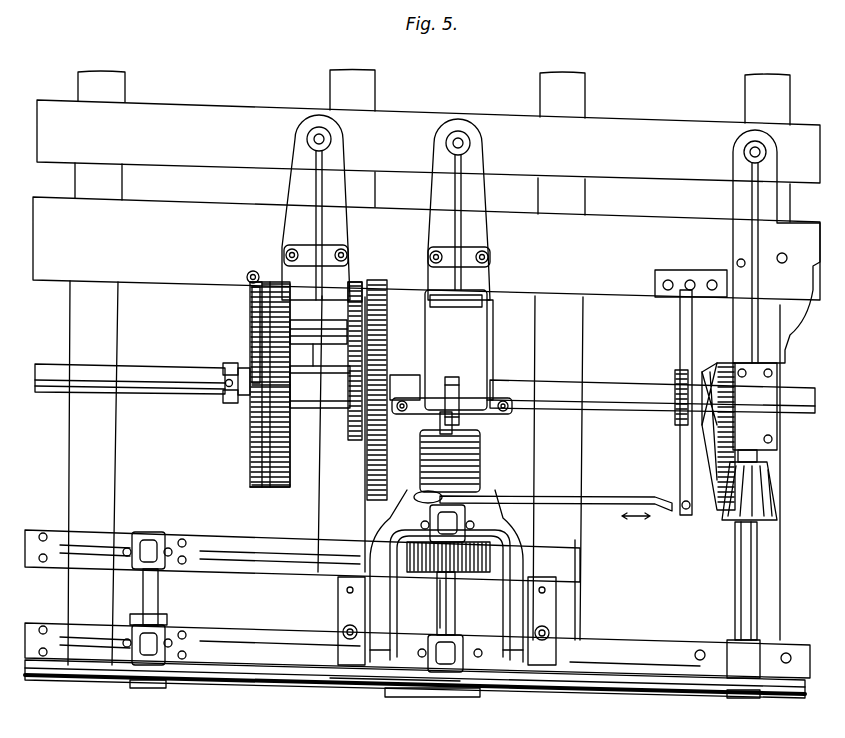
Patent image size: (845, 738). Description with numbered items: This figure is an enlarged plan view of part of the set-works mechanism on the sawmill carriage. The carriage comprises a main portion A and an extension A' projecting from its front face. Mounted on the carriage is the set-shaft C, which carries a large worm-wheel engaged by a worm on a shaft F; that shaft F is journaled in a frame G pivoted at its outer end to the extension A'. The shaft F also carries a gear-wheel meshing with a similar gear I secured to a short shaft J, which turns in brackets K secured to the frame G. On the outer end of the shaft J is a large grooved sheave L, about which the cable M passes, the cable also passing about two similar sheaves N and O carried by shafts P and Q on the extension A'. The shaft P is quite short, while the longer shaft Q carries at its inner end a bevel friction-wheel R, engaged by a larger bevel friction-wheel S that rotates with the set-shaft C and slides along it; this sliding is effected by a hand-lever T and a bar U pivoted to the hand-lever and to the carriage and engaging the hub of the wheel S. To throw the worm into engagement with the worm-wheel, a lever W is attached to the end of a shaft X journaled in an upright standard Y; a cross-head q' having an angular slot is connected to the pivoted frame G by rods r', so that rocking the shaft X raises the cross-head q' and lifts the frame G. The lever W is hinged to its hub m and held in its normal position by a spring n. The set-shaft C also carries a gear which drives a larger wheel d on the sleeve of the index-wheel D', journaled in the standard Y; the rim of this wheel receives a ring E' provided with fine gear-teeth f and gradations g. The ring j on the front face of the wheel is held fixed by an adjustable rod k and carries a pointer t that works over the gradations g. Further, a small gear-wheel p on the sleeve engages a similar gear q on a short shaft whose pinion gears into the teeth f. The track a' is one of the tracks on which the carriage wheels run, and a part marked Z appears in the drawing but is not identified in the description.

The main portion of the carriage A is at (426, 368).
The extension of the carriage A' is at (422, 604).
The set-shaft C is at (47, 368).
The index-wheel D' is at (274, 384).
The indicator-ring E' is at (264, 335).
The shaft F is at (456, 606).
The frame G is at (446, 577).
The gear I is at (430, 561).
The short shaft J is at (437, 608).
The brackets K is at (450, 588).
The grooved sheave L is at (468, 690).
The cable M is at (390, 679).
The sheave N is at (108, 677).
The sheave O is at (695, 690).
The shaft P is at (158, 592).
The shaft Q is at (734, 590).
The bevel friction-wheel R is at (730, 505).
The bevel friction-wheel S is at (735, 410).
The hand-lever T is at (536, 507).
The bar U is at (675, 469).
The lever W is at (229, 402).
The shaft X is at (405, 373).
The upright or standard Y is at (318, 343).
The hanger block Z is at (459, 350).
The track a' is at (437, 424).
The gear-wheel d is at (384, 336).
The gear-teeth f is at (286, 286).
The gradations g is at (267, 281).
The ring j is at (250, 425).
The adjustable rod k is at (246, 276).
The hub m is at (221, 366).
The spring n is at (221, 382).
The gear-wheel p is at (353, 441).
The gear q is at (358, 276).
The cross-head q' is at (468, 385).
The rods r' is at (456, 419).
The pointer t is at (258, 386).